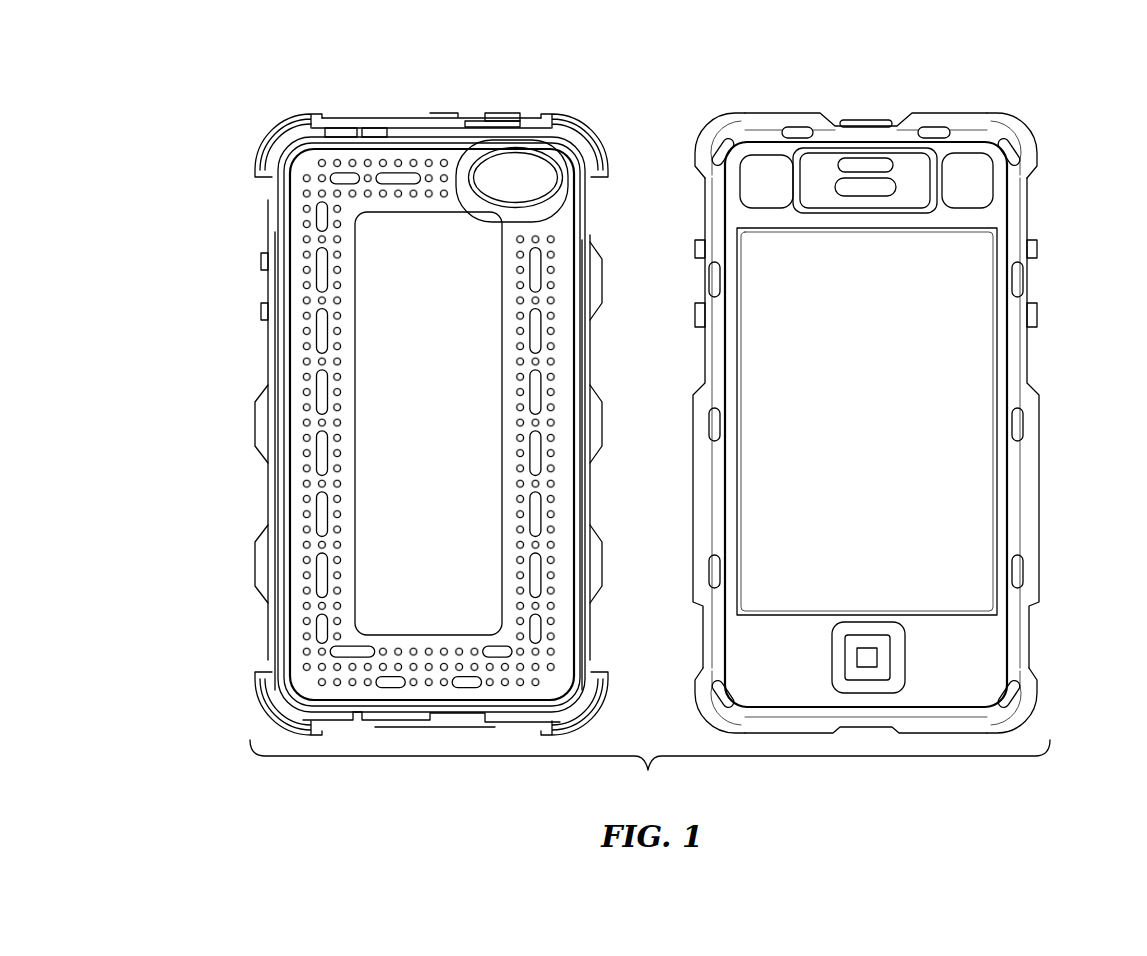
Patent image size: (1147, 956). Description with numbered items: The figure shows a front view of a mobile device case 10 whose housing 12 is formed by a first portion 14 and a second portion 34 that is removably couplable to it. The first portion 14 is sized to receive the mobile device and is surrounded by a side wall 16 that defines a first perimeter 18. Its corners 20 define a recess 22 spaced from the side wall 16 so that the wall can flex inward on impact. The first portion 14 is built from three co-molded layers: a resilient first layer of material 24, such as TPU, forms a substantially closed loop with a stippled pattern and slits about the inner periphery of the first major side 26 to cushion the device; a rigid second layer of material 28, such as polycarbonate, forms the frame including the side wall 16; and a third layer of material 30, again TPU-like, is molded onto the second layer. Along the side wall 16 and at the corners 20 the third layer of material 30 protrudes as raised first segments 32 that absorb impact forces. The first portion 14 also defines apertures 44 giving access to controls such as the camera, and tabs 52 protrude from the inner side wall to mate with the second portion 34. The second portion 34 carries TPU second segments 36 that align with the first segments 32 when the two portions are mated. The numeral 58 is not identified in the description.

The mobile device case 10 is at (333, 775).
The housing 12 is at (663, 437).
The first portion 14 is at (600, 112).
The side wall 16 is at (590, 356).
The first perimeter 18 is at (572, 640).
The corners 20 is at (284, 126).
The recess 22 is at (280, 152).
The first layer of material 24 is at (548, 552).
The first major side 26 is at (305, 622).
The second layer of material 28 is at (263, 490).
The third layer of material 30 is at (599, 142).
The first segments 32 is at (600, 279).
The second portion 34 is at (1050, 112).
The second segments 36 is at (1036, 422).
The apertures 44 is at (513, 176).
The tabs 52 is at (271, 198).
The button cover 58 is at (534, 457).